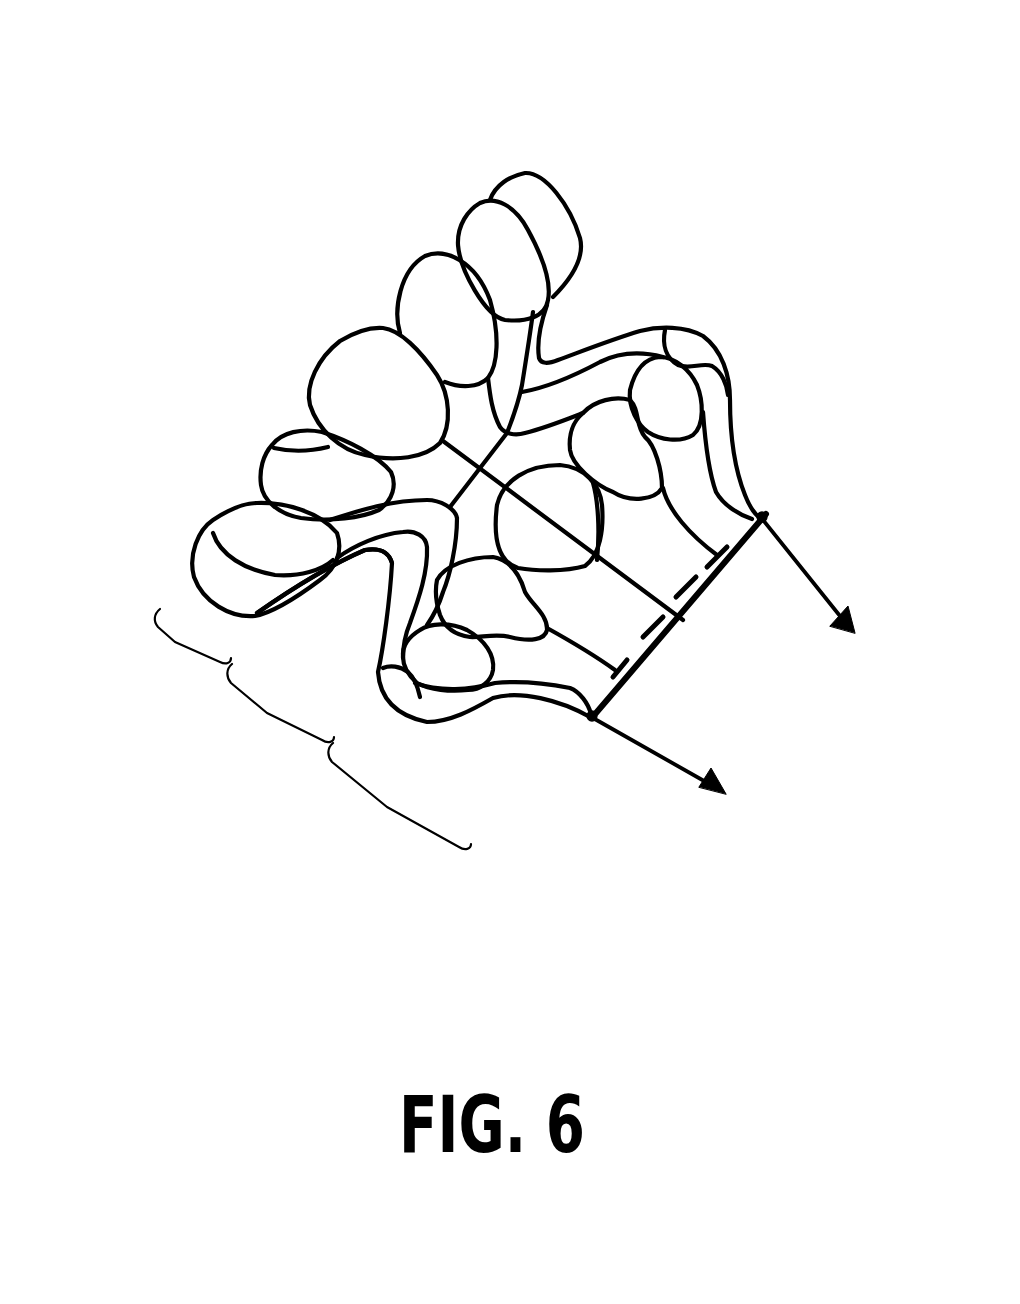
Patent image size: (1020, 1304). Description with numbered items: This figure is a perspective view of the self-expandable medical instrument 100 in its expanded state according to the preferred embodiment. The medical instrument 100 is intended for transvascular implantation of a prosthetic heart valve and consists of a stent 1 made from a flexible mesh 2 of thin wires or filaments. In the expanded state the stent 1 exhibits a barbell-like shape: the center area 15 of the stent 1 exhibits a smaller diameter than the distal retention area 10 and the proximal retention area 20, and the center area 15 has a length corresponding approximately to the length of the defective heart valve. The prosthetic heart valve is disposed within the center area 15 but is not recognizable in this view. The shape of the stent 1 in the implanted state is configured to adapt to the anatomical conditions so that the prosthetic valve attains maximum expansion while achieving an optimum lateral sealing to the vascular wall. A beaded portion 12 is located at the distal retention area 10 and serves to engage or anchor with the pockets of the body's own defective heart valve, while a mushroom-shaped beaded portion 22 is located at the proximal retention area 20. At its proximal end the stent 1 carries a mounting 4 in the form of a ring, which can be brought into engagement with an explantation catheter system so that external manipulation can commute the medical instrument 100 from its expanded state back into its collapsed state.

The stent 1 is at (256, 364).
The medical instrument 100 is at (324, 581).
The beaded portion at the distal retention area 12 is at (535, 176).
The beaded portion at the proximal retention area 22 is at (683, 328).
The mounting 4 is at (760, 518).
The mesh 2 is at (270, 449).
The distal retention area of the stent 10 is at (187, 655).
The center area of the stent 15 is at (280, 716).
The proximal retention area of the stent 20 is at (399, 799).